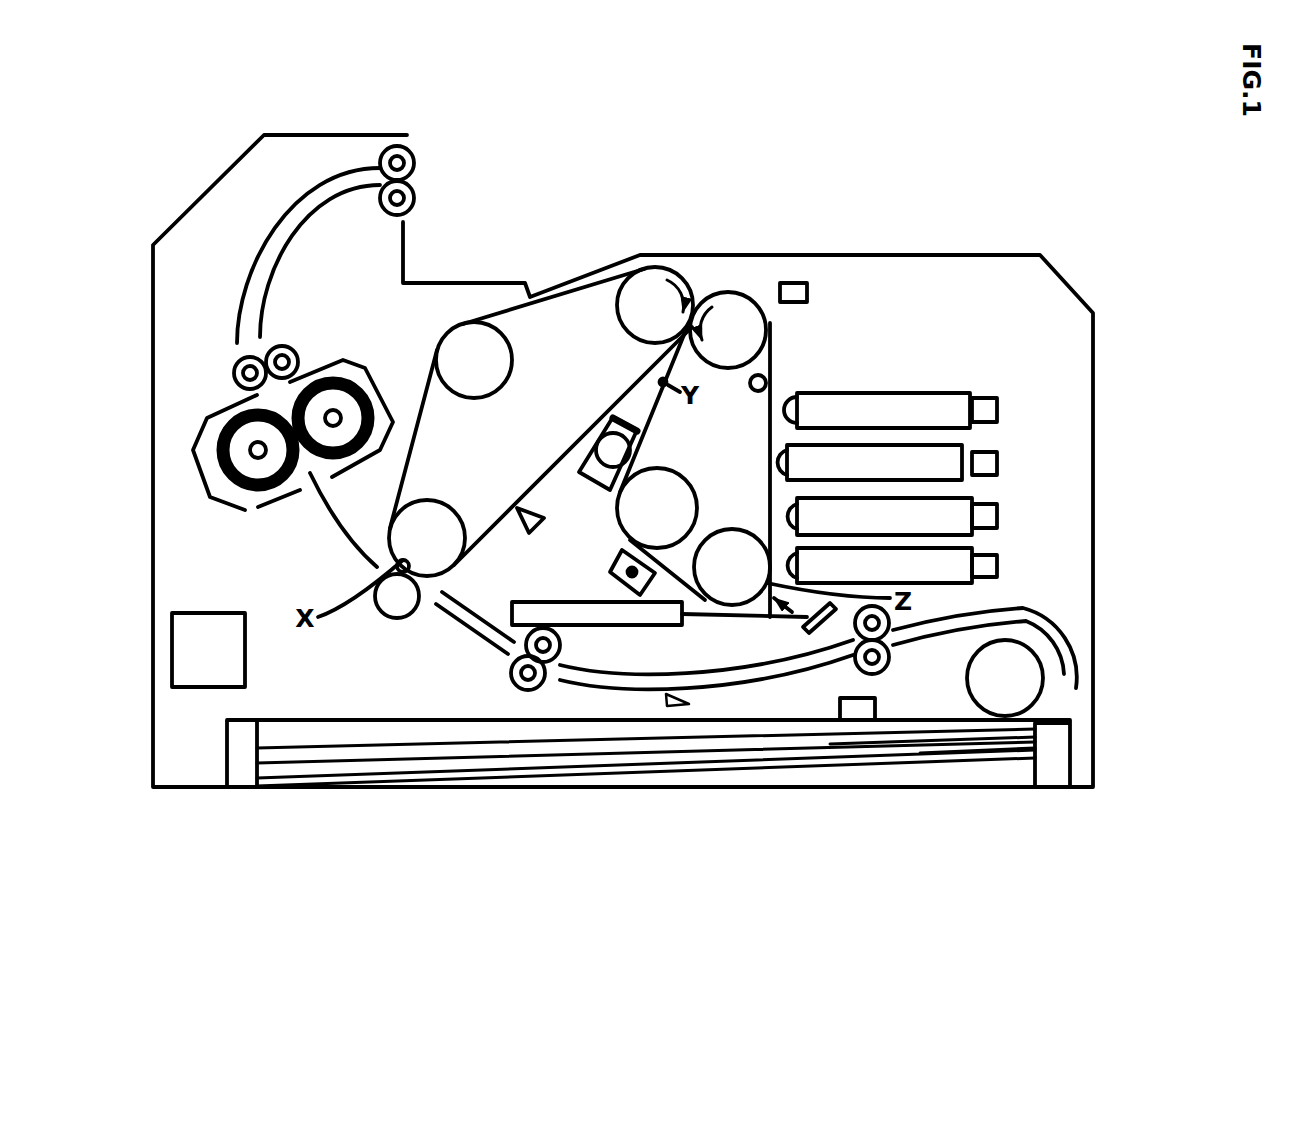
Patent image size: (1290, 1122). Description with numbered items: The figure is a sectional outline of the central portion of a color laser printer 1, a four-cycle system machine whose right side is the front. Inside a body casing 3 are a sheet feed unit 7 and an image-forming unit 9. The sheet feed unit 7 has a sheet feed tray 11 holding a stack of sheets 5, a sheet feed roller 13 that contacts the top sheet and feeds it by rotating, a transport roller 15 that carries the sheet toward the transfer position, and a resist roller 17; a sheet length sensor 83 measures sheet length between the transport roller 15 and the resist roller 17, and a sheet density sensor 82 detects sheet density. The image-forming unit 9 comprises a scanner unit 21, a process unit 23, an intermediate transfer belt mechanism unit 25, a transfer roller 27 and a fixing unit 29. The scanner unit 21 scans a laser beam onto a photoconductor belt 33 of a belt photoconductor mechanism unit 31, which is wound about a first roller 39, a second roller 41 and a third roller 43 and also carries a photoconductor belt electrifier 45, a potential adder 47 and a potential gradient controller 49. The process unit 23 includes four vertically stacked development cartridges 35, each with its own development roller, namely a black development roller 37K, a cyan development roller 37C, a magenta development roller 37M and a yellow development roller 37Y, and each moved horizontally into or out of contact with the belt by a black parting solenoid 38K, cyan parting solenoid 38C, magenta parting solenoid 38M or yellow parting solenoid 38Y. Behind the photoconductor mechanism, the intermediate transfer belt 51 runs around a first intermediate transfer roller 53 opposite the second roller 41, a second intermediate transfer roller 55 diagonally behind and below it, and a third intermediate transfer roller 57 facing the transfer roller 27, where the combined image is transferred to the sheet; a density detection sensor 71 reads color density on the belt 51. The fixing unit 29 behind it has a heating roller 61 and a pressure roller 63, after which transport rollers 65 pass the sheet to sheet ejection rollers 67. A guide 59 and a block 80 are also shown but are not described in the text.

The color laser printer 1 is at (560, 815).
The body casing 3 is at (937, 256).
The sheets 5 is at (878, 752).
The sheet feed unit 7 is at (1057, 794).
The image-forming unit 9 is at (440, 611).
The sheet feed tray 11 is at (985, 787).
The sheet feed roller 13 is at (1020, 692).
The transport roller 15 is at (890, 664).
The resist roller 17 is at (513, 678).
The scanner unit 21 is at (680, 627).
The process unit 23 is at (833, 307).
The intermediate transfer belt mechanism unit 25 is at (536, 298).
The transfer roller 27 is at (384, 610).
The fixing unit 29 is at (200, 407).
The belt photoconductor mechanism unit 31 is at (728, 289).
The photoconductor belt 33 is at (636, 453).
The development cartridges 35 is at (948, 396).
The black development roller 37K is at (805, 410).
The cyan development roller 37C is at (795, 462).
The magenta development roller 37M is at (805, 517).
The yellow development roller 37Y is at (805, 566).
The black parting solenoid 38K is at (1000, 410).
The cyan parting solenoid 38C is at (1000, 462).
The magenta parting solenoid 38M is at (1000, 517).
The yellow parting solenoid 38Y is at (1000, 566).
The first roller 39 is at (733, 530).
The second roller 41 is at (728, 369).
The third roller 43 is at (673, 474).
The photoconductor belt electrifier 45 is at (609, 574).
The potential adder 47 is at (793, 282).
The potential gradient controller 49 is at (757, 392).
The intermediate transfer belt 51 is at (421, 432).
The first intermediate transfer roller 53 is at (620, 313).
The second intermediate transfer roller 55 is at (512, 362).
The third intermediate transfer roller 57 is at (456, 508).
The guide 59 is at (335, 522).
The heating roller 61 is at (318, 374).
The pressure roller 63 is at (256, 500).
The transport rollers 65 is at (238, 362).
The sheet ejection rollers 67 is at (416, 160).
The density detection sensor 71 is at (529, 533).
The controller 80 is at (208, 687).
The sheet density sensor 82 is at (858, 720).
The sheet length sensor 83 is at (690, 689).